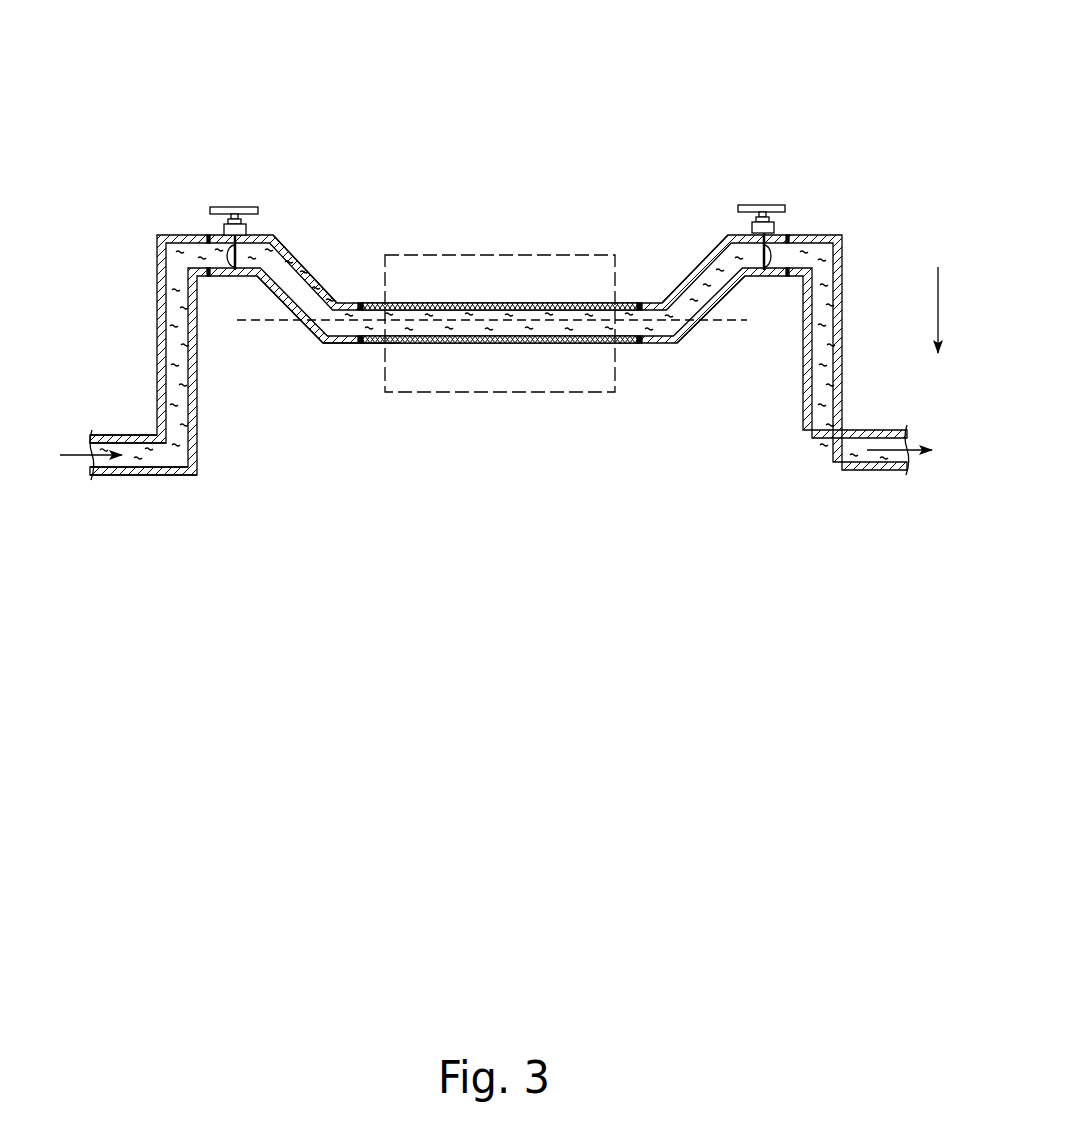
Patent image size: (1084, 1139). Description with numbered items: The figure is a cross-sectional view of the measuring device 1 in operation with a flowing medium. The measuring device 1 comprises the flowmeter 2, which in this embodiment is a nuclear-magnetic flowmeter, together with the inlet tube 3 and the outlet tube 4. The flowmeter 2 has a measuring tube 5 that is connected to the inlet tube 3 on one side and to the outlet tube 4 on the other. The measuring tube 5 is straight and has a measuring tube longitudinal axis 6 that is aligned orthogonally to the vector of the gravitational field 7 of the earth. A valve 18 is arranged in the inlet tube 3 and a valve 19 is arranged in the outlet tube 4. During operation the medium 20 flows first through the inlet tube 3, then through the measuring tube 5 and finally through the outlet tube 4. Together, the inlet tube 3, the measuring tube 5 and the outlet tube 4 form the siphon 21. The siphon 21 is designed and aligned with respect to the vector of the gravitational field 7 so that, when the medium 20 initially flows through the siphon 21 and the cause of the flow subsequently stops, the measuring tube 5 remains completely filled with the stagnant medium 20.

The measuring device 1 is at (772, 100).
The flowmeter 2 is at (417, 255).
The inlet tube 3 is at (313, 242).
The outlet tube 4 is at (692, 238).
The measuring tube 5 is at (623, 342).
The measuring tube longitudinal axis 6 is at (250, 325).
The vector of the gravitational field 7 is at (939, 288).
The valve 18 is at (222, 235).
The valve 19 is at (775, 230).
The medium 20 is at (163, 456).
The siphon 21 is at (337, 402).